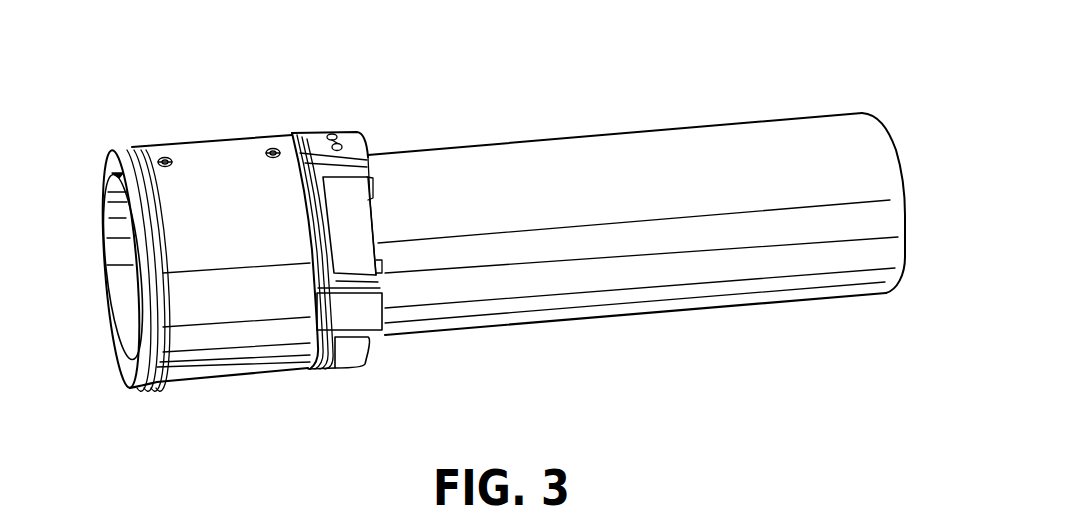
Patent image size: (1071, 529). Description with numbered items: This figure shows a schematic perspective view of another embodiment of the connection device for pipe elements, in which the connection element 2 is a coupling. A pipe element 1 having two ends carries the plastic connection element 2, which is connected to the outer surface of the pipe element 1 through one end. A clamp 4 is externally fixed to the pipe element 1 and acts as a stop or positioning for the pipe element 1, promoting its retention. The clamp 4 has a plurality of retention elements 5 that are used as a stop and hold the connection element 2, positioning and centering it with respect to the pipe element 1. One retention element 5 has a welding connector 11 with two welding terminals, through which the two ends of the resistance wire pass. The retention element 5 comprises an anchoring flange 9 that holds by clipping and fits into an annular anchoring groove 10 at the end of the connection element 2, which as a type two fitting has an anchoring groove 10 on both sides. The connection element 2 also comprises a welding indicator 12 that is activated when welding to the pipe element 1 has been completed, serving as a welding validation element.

The pipe element 1 is at (577, 177).
The connection element 2 is at (180, 378).
The clamp 4 is at (350, 233).
The retention element 5 is at (313, 147).
The anchoring flange 9 is at (297, 135).
The anchoring groove 10 is at (132, 152).
The welding connector 11 is at (342, 145).
The welding indicator 12 is at (170, 156).